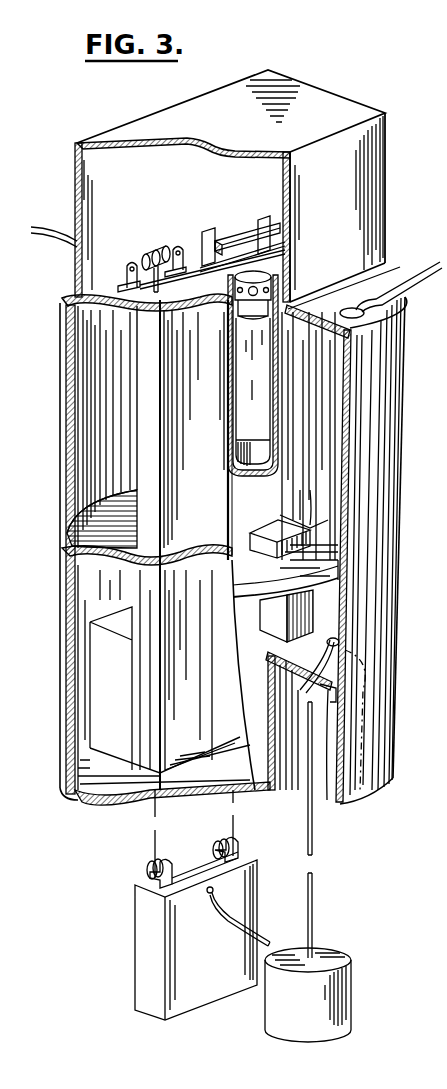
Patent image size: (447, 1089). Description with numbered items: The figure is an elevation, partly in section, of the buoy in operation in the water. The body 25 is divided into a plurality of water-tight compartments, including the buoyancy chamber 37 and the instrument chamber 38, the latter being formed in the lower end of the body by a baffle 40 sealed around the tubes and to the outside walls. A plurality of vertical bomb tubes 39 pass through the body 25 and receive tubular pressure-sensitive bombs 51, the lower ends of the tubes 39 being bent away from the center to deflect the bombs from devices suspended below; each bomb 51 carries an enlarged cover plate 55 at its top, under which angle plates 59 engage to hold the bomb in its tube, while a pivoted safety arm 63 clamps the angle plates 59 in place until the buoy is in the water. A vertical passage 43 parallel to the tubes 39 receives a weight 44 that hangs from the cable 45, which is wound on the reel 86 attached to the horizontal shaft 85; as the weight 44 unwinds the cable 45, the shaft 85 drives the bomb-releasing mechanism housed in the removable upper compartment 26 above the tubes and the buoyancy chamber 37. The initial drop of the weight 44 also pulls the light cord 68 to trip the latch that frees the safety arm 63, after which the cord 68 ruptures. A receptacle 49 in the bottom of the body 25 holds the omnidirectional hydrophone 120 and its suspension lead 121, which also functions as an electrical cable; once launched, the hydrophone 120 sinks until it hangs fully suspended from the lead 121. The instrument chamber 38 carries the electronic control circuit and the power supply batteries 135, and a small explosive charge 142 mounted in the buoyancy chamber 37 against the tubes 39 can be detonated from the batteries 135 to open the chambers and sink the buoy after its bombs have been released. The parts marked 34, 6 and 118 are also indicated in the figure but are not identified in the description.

The upper compartment 26 is at (330, 103).
The conductor wire 34 is at (47, 224).
The body 25 is at (45, 330).
The inner cylinder 6 is at (90, 477).
The baffle 40 is at (92, 528).
The horizontal shaft 85 is at (131, 262).
The reel 86 is at (150, 256).
The cable 45 is at (177, 244).
The angle plates 59 is at (208, 235).
The safety arm 63 is at (246, 230).
The cover plate 55 is at (290, 272).
The bomb 51 is at (262, 392).
The vertical bomb tubes 39 is at (248, 451).
The buoyancy chamber 37 is at (345, 464).
The explosive charge 142 is at (262, 550).
The block 118 is at (333, 614).
The instrument chamber 38 is at (340, 645).
The receptacle 49 is at (296, 780).
The power supply batteries 135 is at (126, 670).
The vertical passage 43 is at (190, 746).
The weight 44 is at (226, 950).
The light cord 68 is at (258, 925).
The suspension lead 121 is at (316, 903).
The omnidirectional hydrophone 120 is at (354, 995).